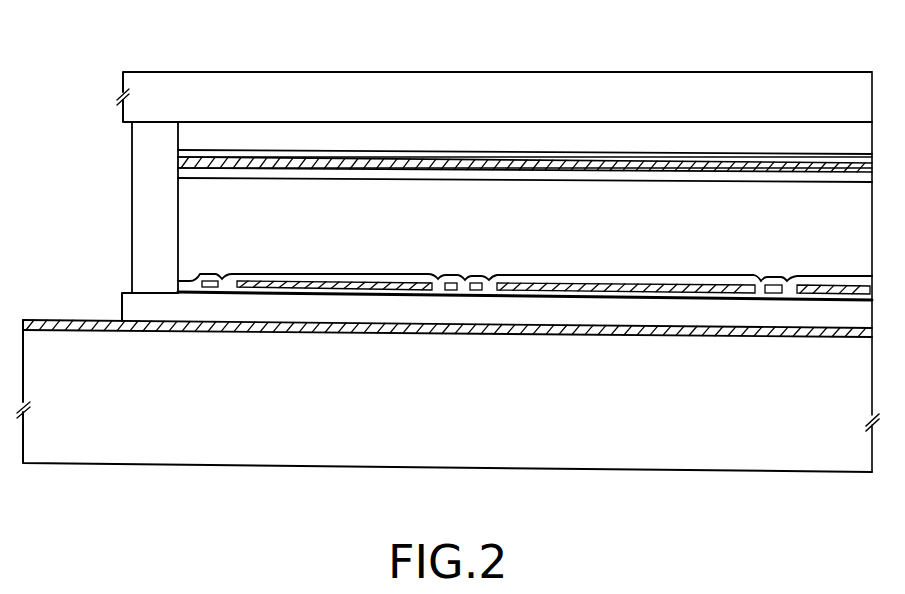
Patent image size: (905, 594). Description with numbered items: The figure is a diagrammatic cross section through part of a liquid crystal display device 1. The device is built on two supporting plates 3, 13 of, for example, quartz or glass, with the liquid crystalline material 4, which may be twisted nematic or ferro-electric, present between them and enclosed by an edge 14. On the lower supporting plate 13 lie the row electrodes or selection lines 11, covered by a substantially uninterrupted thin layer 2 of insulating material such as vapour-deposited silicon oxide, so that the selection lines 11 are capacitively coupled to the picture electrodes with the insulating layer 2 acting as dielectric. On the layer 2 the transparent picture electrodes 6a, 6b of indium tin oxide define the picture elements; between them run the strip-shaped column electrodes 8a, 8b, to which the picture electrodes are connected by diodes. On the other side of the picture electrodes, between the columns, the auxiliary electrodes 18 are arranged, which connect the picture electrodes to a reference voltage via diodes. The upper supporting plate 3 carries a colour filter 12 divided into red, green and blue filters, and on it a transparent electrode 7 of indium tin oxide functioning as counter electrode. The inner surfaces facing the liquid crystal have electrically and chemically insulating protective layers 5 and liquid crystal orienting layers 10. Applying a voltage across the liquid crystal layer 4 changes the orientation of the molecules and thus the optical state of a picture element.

The liquid crystal display device 1 is at (116, 487).
The thin layer of insulating material 2 is at (699, 307).
The supporting plate 3 is at (506, 90).
The liquid crystalline material 4 is at (380, 197).
The protective layers 5 is at (656, 160).
The picture electrode 6a is at (323, 281).
The picture electrode 6b is at (557, 287).
The transparent electrode 7 is at (318, 163).
The column electrode 8a is at (453, 283).
The column electrode 8b is at (480, 283).
The liquid crystal orienting layers 10 is at (594, 175).
The row electrodes or selection lines 11 is at (75, 322).
The colour filter 12 is at (437, 135).
The supporting plate 13 is at (355, 447).
The edge 14 is at (147, 198).
The auxiliary electrodes 18 is at (212, 272).